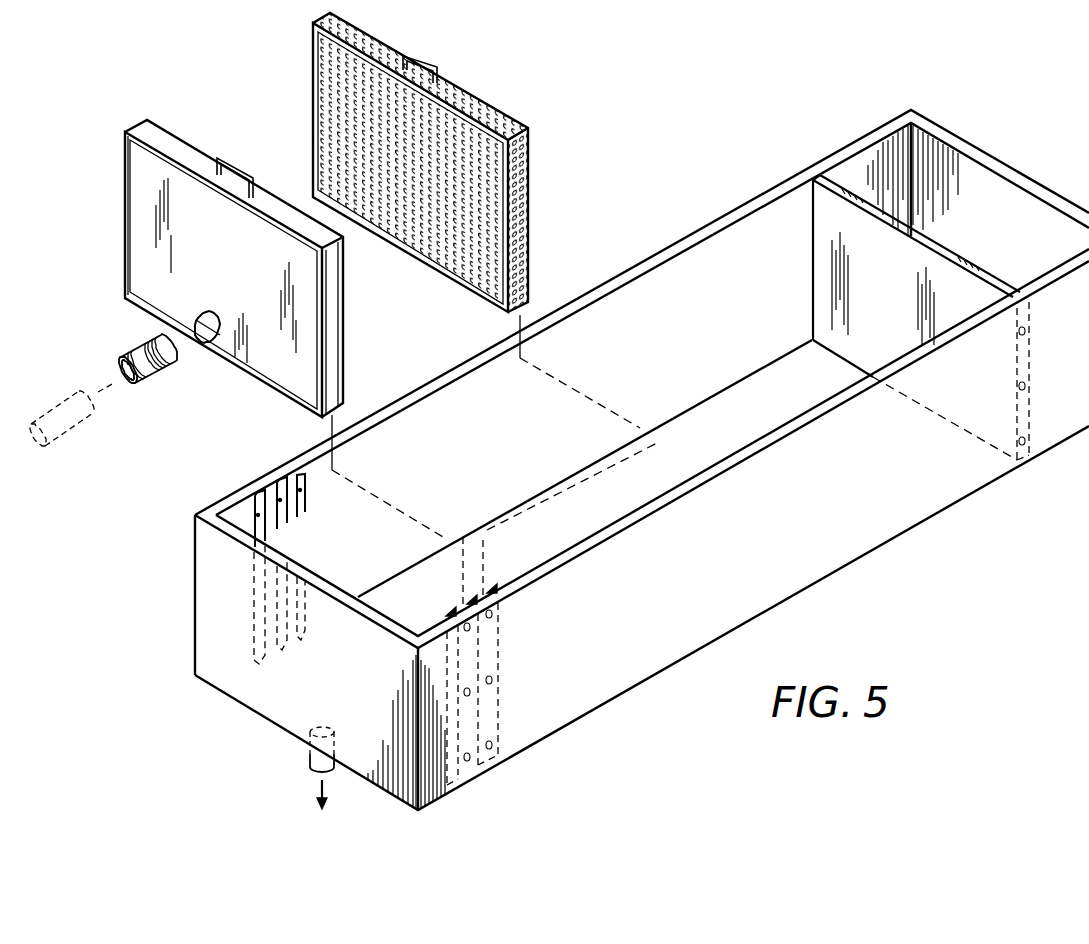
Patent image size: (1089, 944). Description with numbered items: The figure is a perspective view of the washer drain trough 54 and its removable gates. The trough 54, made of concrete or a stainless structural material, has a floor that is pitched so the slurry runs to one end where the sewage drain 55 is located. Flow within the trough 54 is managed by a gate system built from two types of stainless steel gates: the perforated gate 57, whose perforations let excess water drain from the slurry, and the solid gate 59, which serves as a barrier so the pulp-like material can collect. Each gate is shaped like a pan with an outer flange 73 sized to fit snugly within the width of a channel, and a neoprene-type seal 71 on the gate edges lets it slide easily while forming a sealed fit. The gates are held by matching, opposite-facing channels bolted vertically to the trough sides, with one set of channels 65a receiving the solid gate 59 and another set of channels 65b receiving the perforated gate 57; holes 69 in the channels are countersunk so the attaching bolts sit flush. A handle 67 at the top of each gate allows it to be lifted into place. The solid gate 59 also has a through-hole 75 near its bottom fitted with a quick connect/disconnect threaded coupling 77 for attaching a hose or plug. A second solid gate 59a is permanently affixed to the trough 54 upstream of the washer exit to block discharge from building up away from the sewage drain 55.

The drain trough 54 is at (925, 518).
The sewage drain 55 is at (308, 758).
The perforated gate 57 is at (518, 103).
The solid gate 59 is at (136, 110).
The second solid gate 59a is at (835, 180).
The channels for solid gate 65a is at (266, 483).
The channels for perforated gate 65b is at (291, 474).
The handle 67 is at (233, 158).
The holes 69 is at (493, 747).
The neoprene-type seal 71 is at (338, 310).
The outer flange 73 is at (125, 178).
The through-hole 75 is at (201, 346).
The quick connect/disconnect threaded coupling 77 is at (147, 348).